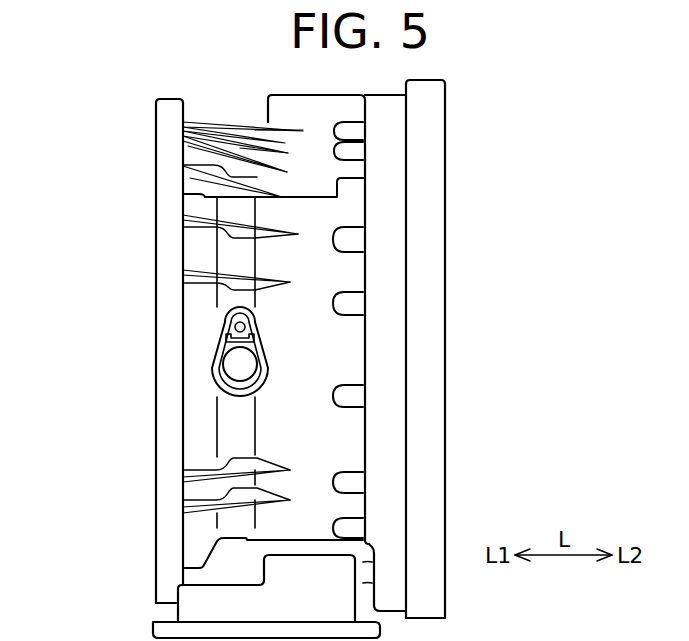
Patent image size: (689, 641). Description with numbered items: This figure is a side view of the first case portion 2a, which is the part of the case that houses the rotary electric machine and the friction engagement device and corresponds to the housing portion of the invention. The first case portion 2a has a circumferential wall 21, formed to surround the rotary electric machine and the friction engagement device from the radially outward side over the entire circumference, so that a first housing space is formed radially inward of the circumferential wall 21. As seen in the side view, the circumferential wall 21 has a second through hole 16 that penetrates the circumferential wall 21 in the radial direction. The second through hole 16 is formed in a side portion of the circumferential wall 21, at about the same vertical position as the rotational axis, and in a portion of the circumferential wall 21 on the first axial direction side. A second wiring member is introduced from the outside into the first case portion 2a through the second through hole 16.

The first case portion 2a is at (154, 181).
The second through hole 16 is at (233, 363).
The circumferential wall 21 is at (343, 275).